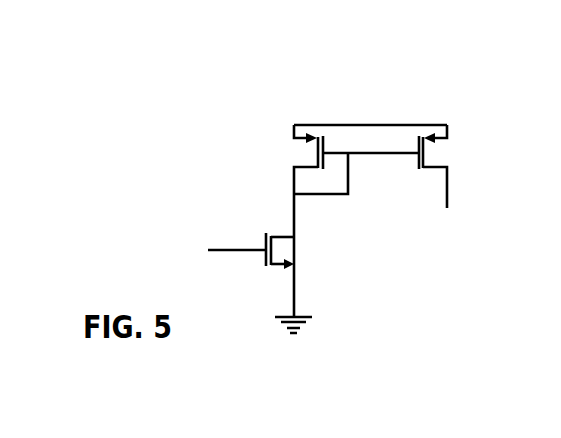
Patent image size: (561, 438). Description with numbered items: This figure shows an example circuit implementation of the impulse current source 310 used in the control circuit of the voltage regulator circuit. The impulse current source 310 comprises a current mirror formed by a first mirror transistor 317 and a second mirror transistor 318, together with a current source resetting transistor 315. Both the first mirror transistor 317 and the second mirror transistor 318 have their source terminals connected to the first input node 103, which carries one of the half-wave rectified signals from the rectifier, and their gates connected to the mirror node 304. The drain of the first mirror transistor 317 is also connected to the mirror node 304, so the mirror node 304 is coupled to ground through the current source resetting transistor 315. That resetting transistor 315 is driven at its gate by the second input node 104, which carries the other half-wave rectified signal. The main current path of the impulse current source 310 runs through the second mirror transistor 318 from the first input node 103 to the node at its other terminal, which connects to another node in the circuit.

The impulse current source 310 is at (323, 86).
The first input node 103 is at (362, 124).
The first mirror transistor 317 is at (298, 142).
The second mirror transistor 318 is at (438, 141).
The mirror node 304 is at (320, 196).
The current source resetting transistor 315 is at (280, 234).
The second input node 104 is at (240, 254).